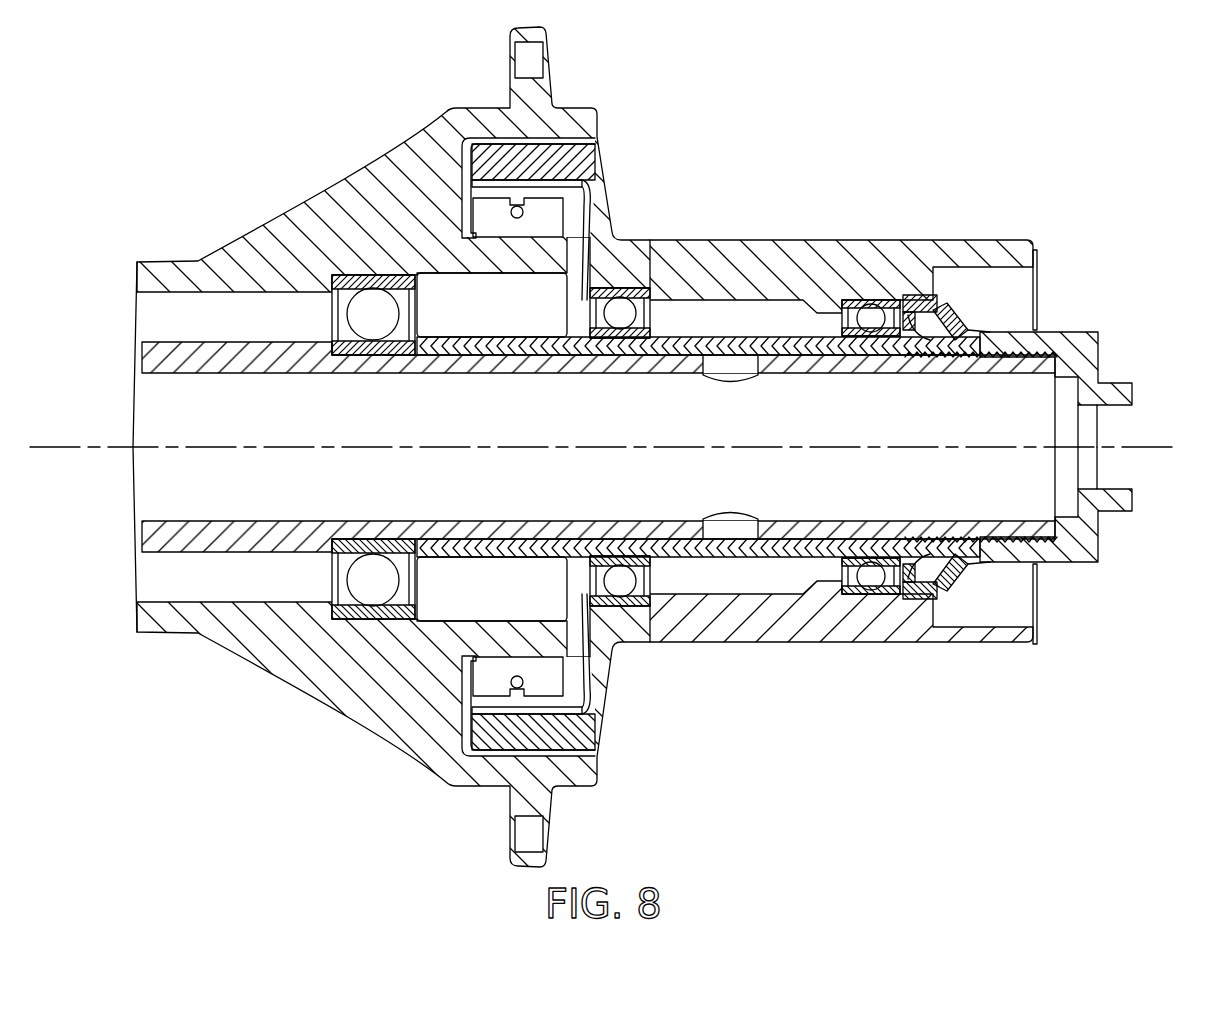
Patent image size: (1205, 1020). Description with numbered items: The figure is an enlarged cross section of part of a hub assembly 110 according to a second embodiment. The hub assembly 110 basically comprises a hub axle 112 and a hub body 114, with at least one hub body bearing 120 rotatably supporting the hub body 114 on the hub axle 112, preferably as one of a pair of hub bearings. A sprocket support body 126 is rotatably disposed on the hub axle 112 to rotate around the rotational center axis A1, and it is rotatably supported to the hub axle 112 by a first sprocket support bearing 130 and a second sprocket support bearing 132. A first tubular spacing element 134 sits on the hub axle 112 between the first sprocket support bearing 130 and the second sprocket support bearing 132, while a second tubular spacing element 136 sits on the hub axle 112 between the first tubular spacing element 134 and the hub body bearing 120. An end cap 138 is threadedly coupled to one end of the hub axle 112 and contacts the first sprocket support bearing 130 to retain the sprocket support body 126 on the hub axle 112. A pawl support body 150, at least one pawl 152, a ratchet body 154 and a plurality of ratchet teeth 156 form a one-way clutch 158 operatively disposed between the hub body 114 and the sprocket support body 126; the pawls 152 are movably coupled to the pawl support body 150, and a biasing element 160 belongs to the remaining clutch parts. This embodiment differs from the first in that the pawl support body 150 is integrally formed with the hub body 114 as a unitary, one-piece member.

The hub assembly 110 is at (240, 158).
The hub axle 112 is at (197, 341).
The hub body 114 is at (340, 187).
The hub body bearing 120 is at (360, 618).
The sprocket support body 126 is at (755, 240).
The first sprocket support bearing 130 is at (867, 298).
The second sprocket support bearing 132 is at (637, 287).
The first tubular spacing element 134 is at (748, 558).
The second tubular spacing element 136 is at (453, 556).
The end cap 138 is at (1080, 330).
The pawl support body 150 is at (460, 273).
The pawl 152 is at (557, 181).
The ratchet body 154 is at (530, 150).
The ratchet teeth 156 is at (467, 228).
The one-way clutch 158 is at (500, 131).
The biasing element 160 is at (517, 218).
The rotational center axis A1 is at (1178, 448).